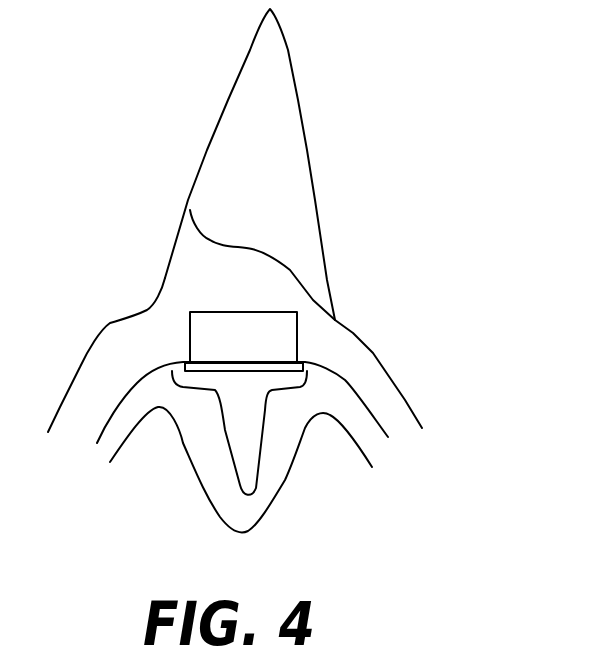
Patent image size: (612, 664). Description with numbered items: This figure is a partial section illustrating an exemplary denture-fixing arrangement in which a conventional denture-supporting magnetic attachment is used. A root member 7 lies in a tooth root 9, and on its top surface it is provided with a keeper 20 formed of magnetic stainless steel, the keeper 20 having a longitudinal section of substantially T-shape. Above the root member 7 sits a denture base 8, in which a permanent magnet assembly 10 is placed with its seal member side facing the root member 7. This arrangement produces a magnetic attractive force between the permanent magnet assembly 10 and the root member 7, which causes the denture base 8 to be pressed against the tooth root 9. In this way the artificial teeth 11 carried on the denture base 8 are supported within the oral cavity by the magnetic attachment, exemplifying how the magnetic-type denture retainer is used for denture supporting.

The root member 7 is at (248, 442).
The denture base 8 is at (353, 352).
The tooth root 9 is at (352, 405).
The permanent magnet assembly 10 is at (213, 328).
The artificial teeth 11 is at (287, 145).
The keeper 20 is at (216, 392).